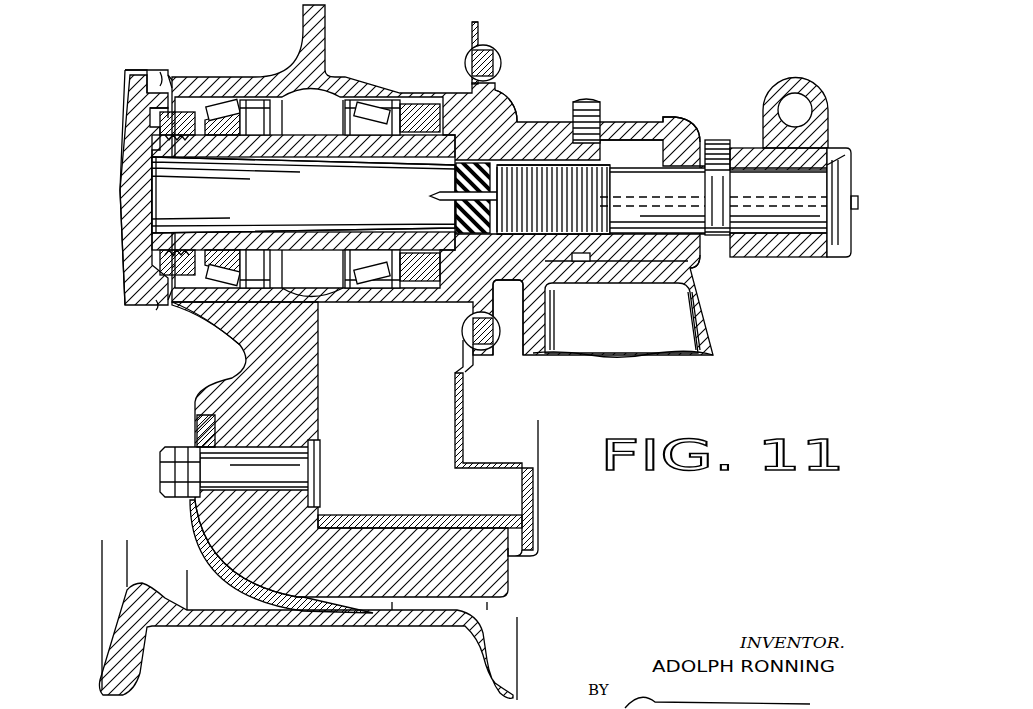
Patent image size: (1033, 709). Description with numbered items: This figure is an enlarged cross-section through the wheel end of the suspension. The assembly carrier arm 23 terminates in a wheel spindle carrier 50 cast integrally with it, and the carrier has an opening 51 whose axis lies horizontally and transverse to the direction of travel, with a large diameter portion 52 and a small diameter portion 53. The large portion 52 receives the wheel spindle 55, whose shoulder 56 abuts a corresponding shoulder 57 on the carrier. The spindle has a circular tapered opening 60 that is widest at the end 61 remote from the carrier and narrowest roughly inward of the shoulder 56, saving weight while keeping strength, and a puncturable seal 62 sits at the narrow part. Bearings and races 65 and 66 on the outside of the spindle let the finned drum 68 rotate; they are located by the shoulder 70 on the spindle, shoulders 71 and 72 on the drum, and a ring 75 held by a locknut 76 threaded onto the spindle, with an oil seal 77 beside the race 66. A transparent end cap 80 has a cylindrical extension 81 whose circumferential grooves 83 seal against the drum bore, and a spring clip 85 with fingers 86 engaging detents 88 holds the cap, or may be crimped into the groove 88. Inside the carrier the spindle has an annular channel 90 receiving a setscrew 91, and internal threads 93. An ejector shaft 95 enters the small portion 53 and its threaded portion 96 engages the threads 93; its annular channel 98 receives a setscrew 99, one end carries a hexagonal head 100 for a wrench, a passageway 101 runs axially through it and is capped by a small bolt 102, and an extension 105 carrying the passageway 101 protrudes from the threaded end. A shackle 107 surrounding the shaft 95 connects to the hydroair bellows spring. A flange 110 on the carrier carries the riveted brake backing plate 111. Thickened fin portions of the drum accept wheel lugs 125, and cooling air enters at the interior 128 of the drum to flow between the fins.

The assembly carrier arm 23 is at (700, 328).
The wheel spindle carrier 50 is at (688, 130).
The opening 51 is at (696, 266).
The large diameter portion 52 is at (635, 112).
The small diameter portion 53 is at (745, 258).
The wheel spindle 55 is at (508, 140).
The shoulder 56 is at (486, 135).
The shoulder 57 is at (493, 290).
The circular tapered opening 60 is at (303, 195).
The end 61 is at (150, 230).
The puncturable seal 62 is at (456, 210).
The bearing and race 65 is at (226, 103).
The bearing and race 66 is at (405, 104).
The finned drum 68 is at (203, 392).
The shoulder 70 is at (452, 140).
The shoulder 71 is at (258, 100).
The shoulder 72 is at (352, 100).
The ring 75 is at (208, 110).
The locknut 76 is at (178, 112).
The oil seal 77 is at (468, 78).
The transparent end cap 80 is at (120, 174).
The cylindrical extension 81 is at (195, 305).
The circumferential grooves 83 is at (148, 120).
The spring clip 85 is at (124, 80).
The fingers 86 is at (160, 72).
The detents 88 is at (168, 75).
The annular channel 90 is at (600, 120).
The setscrew 91 is at (583, 102).
The internal threads 93 is at (590, 257).
The ejector shaft 95 is at (800, 230).
The threaded portion 96 is at (608, 180).
The annular channel 98 is at (728, 178).
The setscrew 99 is at (718, 140).
The hexagonal head 100 is at (850, 258).
The passageway 101 is at (852, 170).
The small bolt 102 is at (858, 206).
The extension 105 is at (430, 196).
The shackle 107 is at (828, 125).
The flange 110 is at (490, 348).
The brake backing plate 111 is at (464, 435).
The wheel lugs 125 is at (322, 465).
The interior of the drum 128 is at (178, 497).